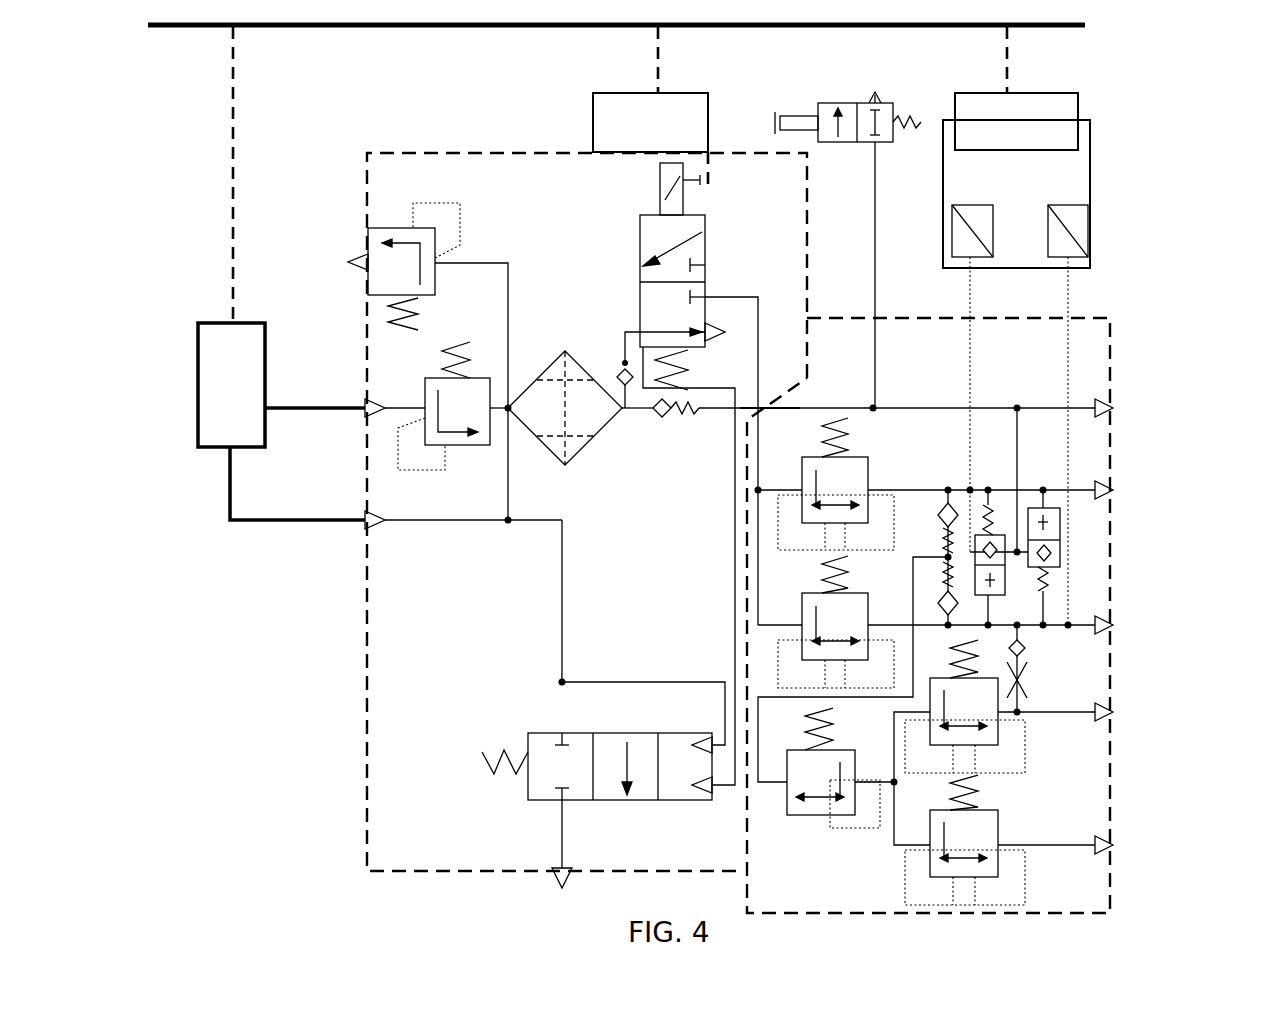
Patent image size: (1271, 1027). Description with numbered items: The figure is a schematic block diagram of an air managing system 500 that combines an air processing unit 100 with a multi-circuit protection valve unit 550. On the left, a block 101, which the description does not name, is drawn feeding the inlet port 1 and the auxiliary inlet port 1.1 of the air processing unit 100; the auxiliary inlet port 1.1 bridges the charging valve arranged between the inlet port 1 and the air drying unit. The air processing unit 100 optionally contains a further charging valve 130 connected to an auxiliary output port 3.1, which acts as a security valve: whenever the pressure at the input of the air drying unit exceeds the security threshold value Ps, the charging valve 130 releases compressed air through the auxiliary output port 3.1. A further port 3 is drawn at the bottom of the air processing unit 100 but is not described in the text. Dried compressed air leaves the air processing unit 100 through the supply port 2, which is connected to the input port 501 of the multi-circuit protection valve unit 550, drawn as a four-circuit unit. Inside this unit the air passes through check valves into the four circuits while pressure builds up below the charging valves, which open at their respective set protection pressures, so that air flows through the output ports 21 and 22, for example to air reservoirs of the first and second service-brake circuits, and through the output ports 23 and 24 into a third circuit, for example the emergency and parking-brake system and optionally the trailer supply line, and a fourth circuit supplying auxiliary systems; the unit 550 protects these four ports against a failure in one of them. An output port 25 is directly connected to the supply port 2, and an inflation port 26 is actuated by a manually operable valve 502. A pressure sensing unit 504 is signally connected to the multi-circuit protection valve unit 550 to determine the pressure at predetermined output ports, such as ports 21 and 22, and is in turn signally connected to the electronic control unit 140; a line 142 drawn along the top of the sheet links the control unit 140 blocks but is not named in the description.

The data bus / control line 142 is at (172, 28).
The electronic control unit 140 is at (593, 100).
The pressure sensing unit 504 is at (1090, 192).
The air managing system 500 is at (1158, 288).
The manually operable valve 502 is at (818, 102).
The inflation port 26 is at (873, 84).
The compressed air source / compressor 101 is at (198, 348).
The air processing unit 100 is at (367, 630).
The inlet port 1 is at (367, 402).
The auxiliary inlet port 1.1 is at (367, 514).
The charging valve 130 is at (367, 238).
The auxiliary output port 3.1 is at (340, 262).
The exhaust port 3 is at (562, 861).
The supply port 2 is at (761, 404).
The input port 501 is at (771, 408).
The multi-circuit protection valve unit 550 is at (1112, 566).
The output port 25 is at (1124, 409).
The output port 22 is at (1124, 491).
The output port 21 is at (1124, 626).
The output port 23 is at (1124, 713).
The output port 24 is at (1124, 846).